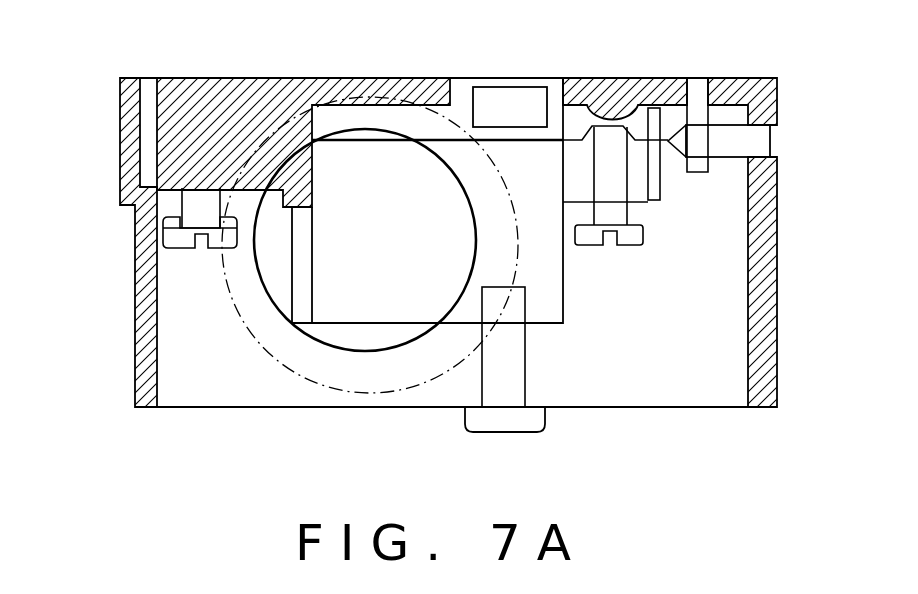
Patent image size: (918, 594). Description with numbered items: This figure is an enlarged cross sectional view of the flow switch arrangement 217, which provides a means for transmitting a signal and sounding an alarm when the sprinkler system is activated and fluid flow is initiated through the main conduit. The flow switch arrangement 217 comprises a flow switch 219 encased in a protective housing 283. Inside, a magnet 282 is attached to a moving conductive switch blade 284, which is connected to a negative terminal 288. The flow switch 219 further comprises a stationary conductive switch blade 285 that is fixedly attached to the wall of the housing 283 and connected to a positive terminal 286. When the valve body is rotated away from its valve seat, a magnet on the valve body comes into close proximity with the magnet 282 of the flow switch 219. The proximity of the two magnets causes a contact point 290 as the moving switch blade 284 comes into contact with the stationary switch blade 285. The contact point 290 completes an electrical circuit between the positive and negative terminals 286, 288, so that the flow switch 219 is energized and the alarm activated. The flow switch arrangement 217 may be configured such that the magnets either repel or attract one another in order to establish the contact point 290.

The flow switch arrangement 217 is at (463, 62).
The flow switch 219 is at (600, 277).
The magnet 282 is at (517, 100).
The protective housing 283 is at (218, 407).
The moving conductive switch blade 284 is at (638, 105).
The stationary conductive switch blade 285 is at (533, 142).
The positive terminal 286 is at (627, 214).
The negative terminal 288 is at (180, 210).
The contact point 290 is at (620, 122).